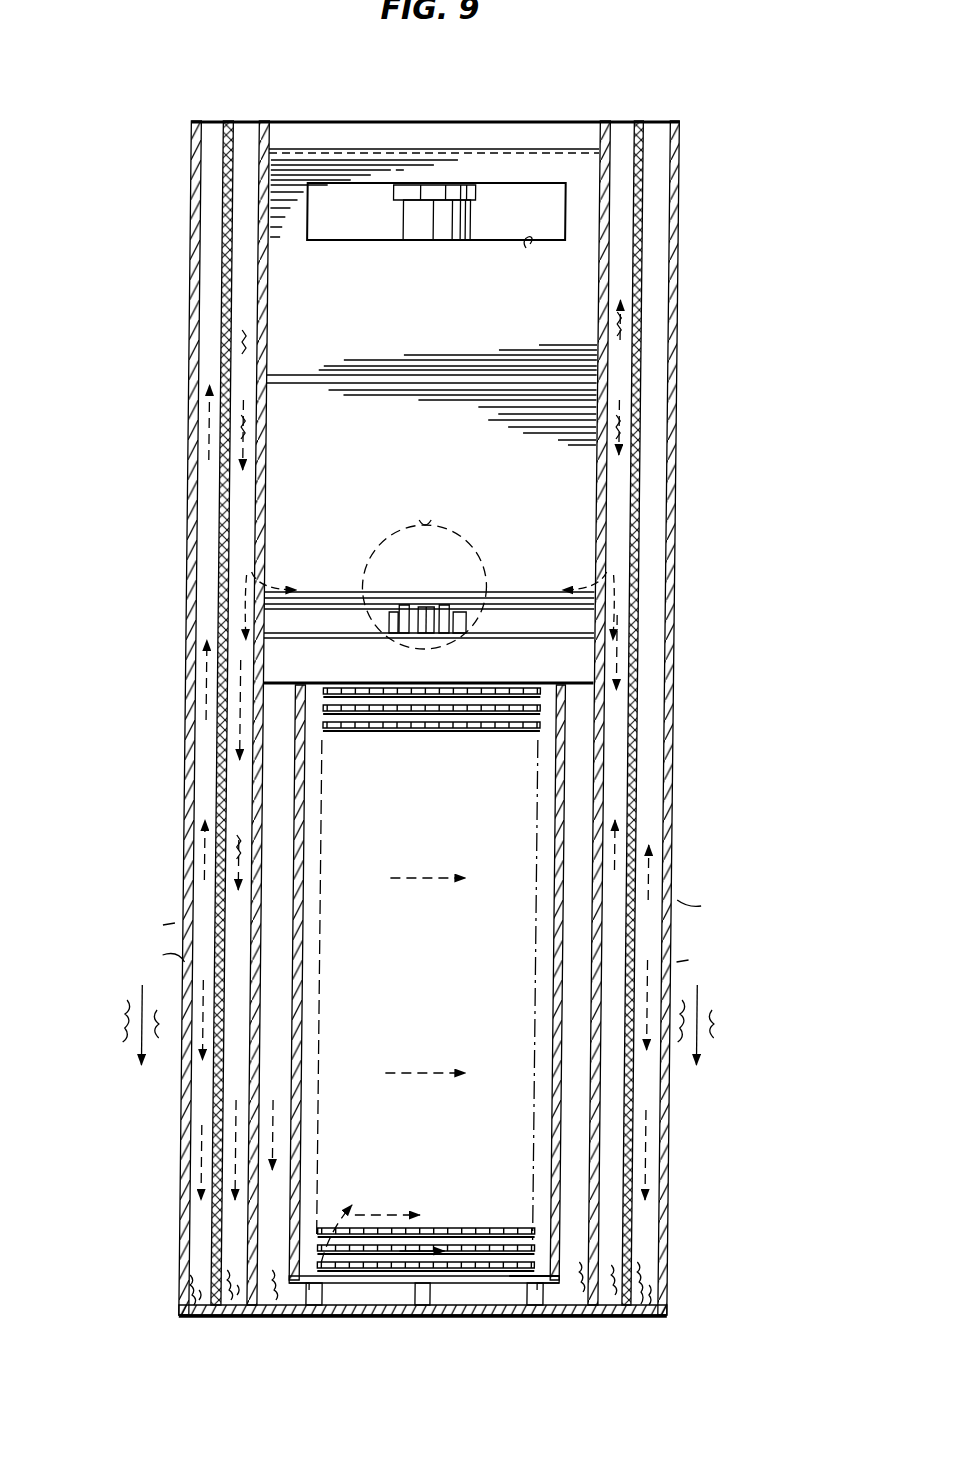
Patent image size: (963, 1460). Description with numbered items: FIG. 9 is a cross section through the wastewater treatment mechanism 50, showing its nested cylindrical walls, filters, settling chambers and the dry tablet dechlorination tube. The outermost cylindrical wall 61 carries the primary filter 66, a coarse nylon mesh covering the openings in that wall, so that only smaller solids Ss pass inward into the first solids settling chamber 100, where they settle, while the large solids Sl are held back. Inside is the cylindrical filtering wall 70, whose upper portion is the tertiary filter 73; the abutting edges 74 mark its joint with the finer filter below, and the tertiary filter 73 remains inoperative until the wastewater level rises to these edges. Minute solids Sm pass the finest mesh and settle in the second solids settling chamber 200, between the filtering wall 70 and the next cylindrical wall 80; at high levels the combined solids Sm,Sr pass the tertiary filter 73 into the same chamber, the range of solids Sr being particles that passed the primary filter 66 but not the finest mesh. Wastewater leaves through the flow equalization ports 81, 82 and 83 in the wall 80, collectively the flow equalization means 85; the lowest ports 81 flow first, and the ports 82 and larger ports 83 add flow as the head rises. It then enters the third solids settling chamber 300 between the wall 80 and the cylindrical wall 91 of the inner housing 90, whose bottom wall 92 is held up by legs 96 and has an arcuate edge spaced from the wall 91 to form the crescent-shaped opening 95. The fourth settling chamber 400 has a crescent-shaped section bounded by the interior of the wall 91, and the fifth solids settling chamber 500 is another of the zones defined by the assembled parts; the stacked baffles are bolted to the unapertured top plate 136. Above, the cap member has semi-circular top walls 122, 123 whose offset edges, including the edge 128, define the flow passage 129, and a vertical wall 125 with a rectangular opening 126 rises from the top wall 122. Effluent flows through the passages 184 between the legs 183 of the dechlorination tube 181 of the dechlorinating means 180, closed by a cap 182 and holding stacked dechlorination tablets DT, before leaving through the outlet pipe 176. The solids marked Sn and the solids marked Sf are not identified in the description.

The wastewater treatment mechanism 50 is at (675, 120).
The cylindrical wall 61 is at (192, 340).
The primary filter 66 is at (190, 935).
The cylindrical filtering wall 70 is at (220, 148).
The tertiary filter 73 is at (236, 142).
The abutting edges 74 is at (233, 464).
The cylindrical wall 80 is at (600, 838).
The flow equalization ports 81 is at (270, 566).
The flow equalization ports 82 is at (270, 505).
The flow equalization ports 83 is at (270, 450).
The flow equalization means 85 is at (332, 466).
The inner housing 90 is at (561, 1018).
The cylindrical wall 91 is at (541, 950).
The bottom wall 92 is at (360, 1283).
The crescent-shaped opening 95 is at (538, 1287).
The legs 96 is at (328, 1305).
The first solids settling chamber 100 is at (663, 332).
The semi-circular top wall 122 is at (326, 592).
The semi-circular top wall 123 is at (538, 640).
The vertical wall 125 is at (454, 302).
The rectangular opening 126 is at (528, 259).
The edge 128 is at (346, 640).
The flow passage 129 is at (502, 612).
The top plate 136 is at (582, 700).
The outlet pipe 176 is at (428, 525).
The dechlorinating means 180 is at (400, 224).
The dechlorination tube 181 is at (460, 230).
The cap 182 is at (440, 188).
The legs 183 is at (446, 640).
The passages 184 is at (438, 608).
The second solids settling chamber 200 is at (612, 646).
The third solids settling chamber 300 is at (286, 1068).
The fourth settling chamber 400 is at (314, 992).
The fifth solids settling chamber 500 is at (456, 929).
The dechlorination tablets DT is at (418, 608).
The minute solids Sm is at (248, 340).
The nitrogen stream Sn is at (250, 425).
The range of solids Sr is at (622, 430).
The large solids Sl is at (150, 1058).
The smaller solids Ss is at (652, 1292).
The feed stream Sf is at (304, 1290).
The minute solids and range of solids Sm,Sr is at (244, 1305).